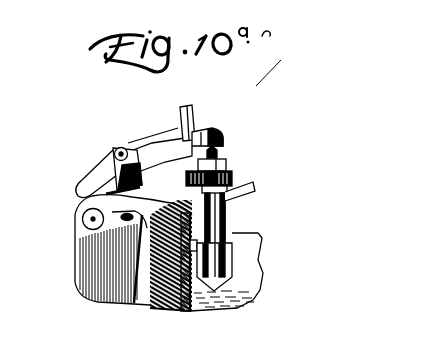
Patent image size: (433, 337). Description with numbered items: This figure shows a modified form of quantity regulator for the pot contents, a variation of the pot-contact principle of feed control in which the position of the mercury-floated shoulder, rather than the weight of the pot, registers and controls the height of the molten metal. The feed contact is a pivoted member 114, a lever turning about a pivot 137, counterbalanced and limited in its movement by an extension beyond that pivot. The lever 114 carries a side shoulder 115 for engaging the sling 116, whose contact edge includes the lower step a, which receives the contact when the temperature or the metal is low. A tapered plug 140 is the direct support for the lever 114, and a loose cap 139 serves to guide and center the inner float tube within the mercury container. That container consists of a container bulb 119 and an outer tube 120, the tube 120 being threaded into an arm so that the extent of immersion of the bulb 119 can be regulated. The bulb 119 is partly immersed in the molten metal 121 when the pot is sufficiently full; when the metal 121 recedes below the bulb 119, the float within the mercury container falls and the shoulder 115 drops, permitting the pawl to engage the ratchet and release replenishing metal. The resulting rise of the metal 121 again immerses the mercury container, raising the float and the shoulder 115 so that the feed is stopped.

The pivoted member 114 is at (96, 178).
The pivot 137 is at (120, 147).
The side shoulder 115 is at (201, 145).
The sling 116 is at (181, 128).
The lower step a is at (198, 131).
The tapered plug 140 is at (216, 150).
The loose cap 139 is at (226, 168).
The tube 120 is at (229, 212).
The container bulb 119 is at (235, 267).
The metal 121 is at (257, 290).